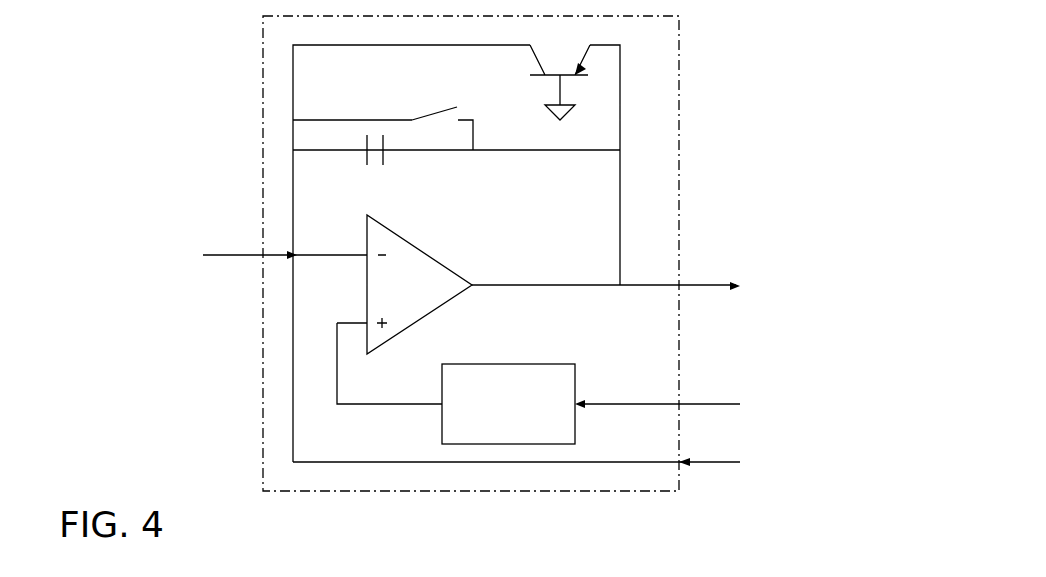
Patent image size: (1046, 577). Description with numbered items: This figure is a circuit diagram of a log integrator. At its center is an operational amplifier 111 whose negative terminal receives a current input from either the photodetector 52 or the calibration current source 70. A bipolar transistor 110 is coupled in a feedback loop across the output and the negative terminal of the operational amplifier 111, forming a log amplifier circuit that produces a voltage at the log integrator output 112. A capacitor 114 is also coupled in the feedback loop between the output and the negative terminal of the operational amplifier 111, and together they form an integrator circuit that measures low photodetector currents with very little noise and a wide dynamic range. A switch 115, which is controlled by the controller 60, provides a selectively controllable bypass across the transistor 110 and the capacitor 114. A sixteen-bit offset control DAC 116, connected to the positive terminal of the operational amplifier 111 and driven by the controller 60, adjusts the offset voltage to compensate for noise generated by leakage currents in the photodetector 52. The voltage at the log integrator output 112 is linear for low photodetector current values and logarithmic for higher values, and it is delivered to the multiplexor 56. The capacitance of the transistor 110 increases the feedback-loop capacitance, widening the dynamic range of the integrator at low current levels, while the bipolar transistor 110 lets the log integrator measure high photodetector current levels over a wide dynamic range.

The bipolar transistor 110 is at (512, 72).
The switch 115 is at (412, 120).
The capacitor 114 is at (383, 158).
The operational amplifier 111 is at (430, 255).
The log integrator output 112 is at (620, 290).
The 16-bit offset control DAC 116 is at (510, 363).
The photodetector 52 is at (125, 255).
The multiplexor 56 is at (802, 287).
The controller 60 is at (712, 402).
The calibration current source 70 is at (819, 467).